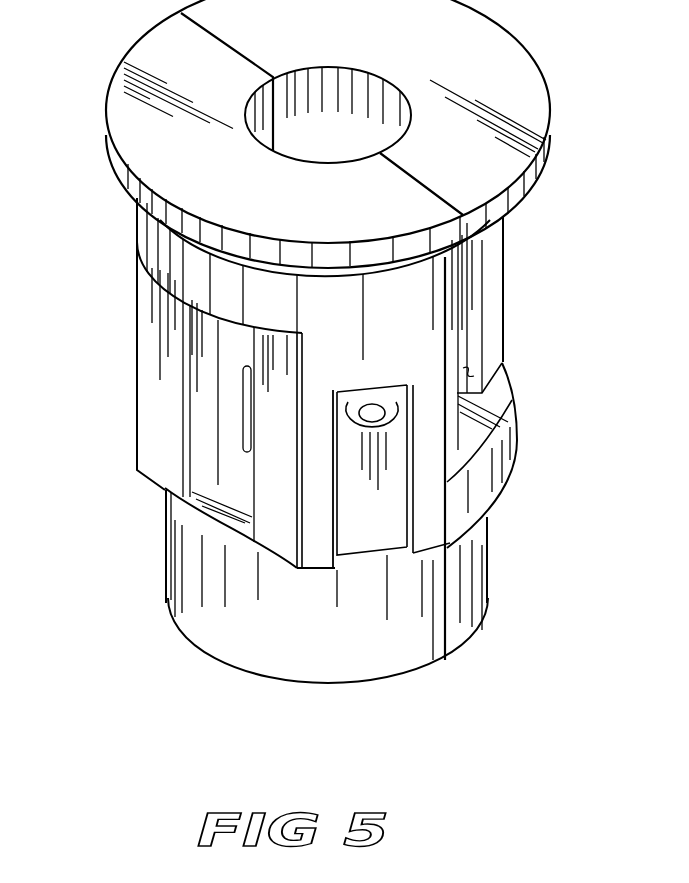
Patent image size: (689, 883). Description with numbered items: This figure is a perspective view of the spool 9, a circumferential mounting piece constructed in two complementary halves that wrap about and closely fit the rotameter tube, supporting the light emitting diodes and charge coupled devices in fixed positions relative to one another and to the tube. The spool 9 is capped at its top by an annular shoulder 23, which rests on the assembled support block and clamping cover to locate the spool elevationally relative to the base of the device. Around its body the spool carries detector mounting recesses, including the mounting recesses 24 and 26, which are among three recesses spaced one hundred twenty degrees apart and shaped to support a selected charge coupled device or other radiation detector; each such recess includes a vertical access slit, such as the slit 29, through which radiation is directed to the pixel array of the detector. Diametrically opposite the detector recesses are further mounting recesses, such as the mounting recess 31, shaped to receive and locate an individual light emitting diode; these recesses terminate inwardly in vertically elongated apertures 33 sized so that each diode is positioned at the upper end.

The spool 9 is at (512, 281).
The annular shoulder 23 is at (135, 194).
The mounting recess 24 is at (470, 378).
The mounting recess 26 is at (165, 490).
The vertical access slit 29 is at (247, 437).
The mounting recess 31 is at (380, 527).
The vertically elongated aperture 33 is at (372, 413).